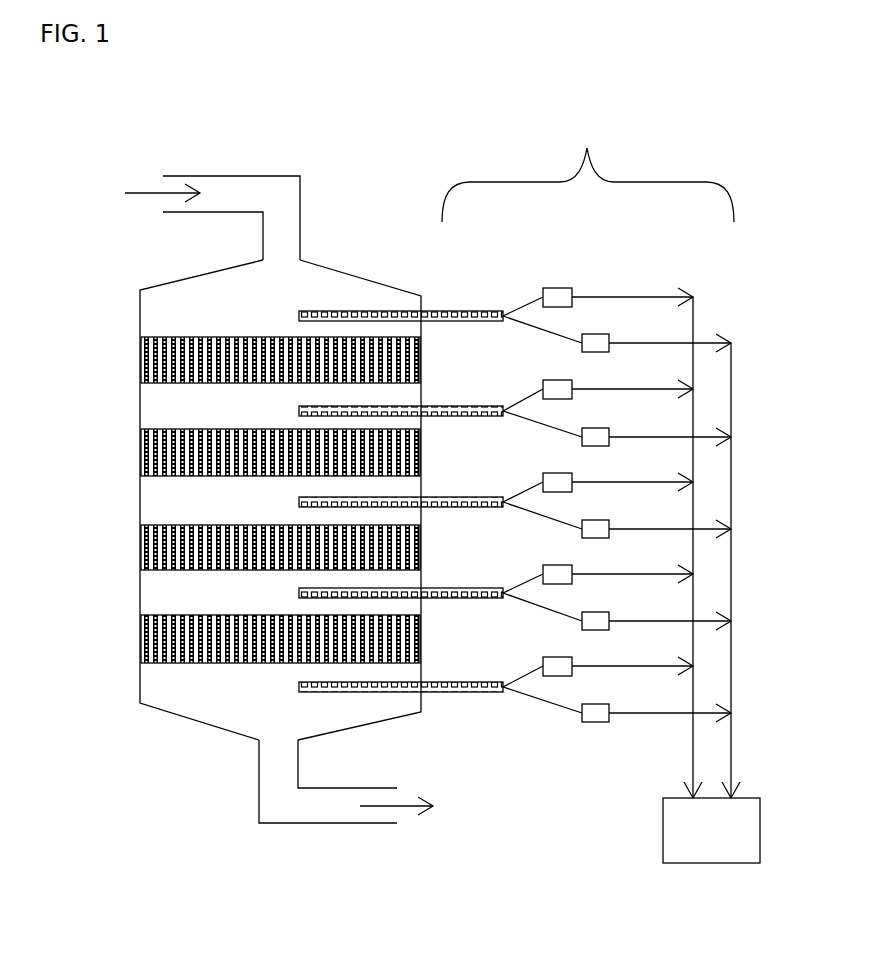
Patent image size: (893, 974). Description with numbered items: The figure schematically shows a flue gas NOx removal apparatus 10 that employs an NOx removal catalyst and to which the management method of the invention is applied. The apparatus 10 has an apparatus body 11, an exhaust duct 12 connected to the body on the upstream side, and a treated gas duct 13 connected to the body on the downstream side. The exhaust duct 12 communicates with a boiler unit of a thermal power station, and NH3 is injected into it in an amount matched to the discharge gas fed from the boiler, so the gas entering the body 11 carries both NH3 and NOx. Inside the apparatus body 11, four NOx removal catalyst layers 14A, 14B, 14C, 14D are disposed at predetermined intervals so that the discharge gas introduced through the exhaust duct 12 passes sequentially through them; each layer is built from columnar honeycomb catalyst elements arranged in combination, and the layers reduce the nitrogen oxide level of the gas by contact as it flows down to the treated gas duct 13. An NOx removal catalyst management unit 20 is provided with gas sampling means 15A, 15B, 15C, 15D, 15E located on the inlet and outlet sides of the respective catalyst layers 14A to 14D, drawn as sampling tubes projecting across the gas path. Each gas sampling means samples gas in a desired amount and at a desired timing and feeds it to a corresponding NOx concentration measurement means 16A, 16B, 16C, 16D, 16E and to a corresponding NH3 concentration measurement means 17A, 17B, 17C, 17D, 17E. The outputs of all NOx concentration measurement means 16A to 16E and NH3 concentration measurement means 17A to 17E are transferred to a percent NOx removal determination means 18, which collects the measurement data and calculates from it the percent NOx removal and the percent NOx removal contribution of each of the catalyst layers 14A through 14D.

The flue gas NOx removal apparatus 10 is at (130, 276).
The apparatus body 11 is at (139, 316).
The exhaust duct 12 is at (262, 176).
The treated gas duct 13 is at (320, 823).
The NOx removal catalyst layer 14A is at (139, 353).
The NOx removal catalyst layer 14B is at (139, 446).
The NOx removal catalyst layer 14C is at (139, 540).
The NOx removal catalyst layer 14D is at (139, 630).
The gas sampling means 15A is at (440, 316).
The gas sampling means 15B is at (438, 410).
The gas sampling means 15C is at (438, 501).
The gas sampling means 15D is at (438, 592).
The gas sampling means 15E is at (438, 686).
The NOx concentration measurement means 16A is at (571, 289).
The NOx concentration measurement means 16B is at (571, 381).
The NOx concentration measurement means 16C is at (571, 474).
The NOx concentration measurement means 16D is at (571, 566).
The NOx concentration measurement means 16E is at (571, 658).
The NH3 concentration measurement means 17A is at (600, 336).
The NH3 concentration measurement means 17B is at (600, 429).
The NH3 concentration measurement means 17C is at (600, 522).
The NH3 concentration measurement means 17D is at (600, 614).
The NH3 concentration measurement means 17E is at (600, 706).
The percent NOx removal determination means 18 is at (702, 853).
The NOx removal catalyst management unit 20 is at (587, 148).